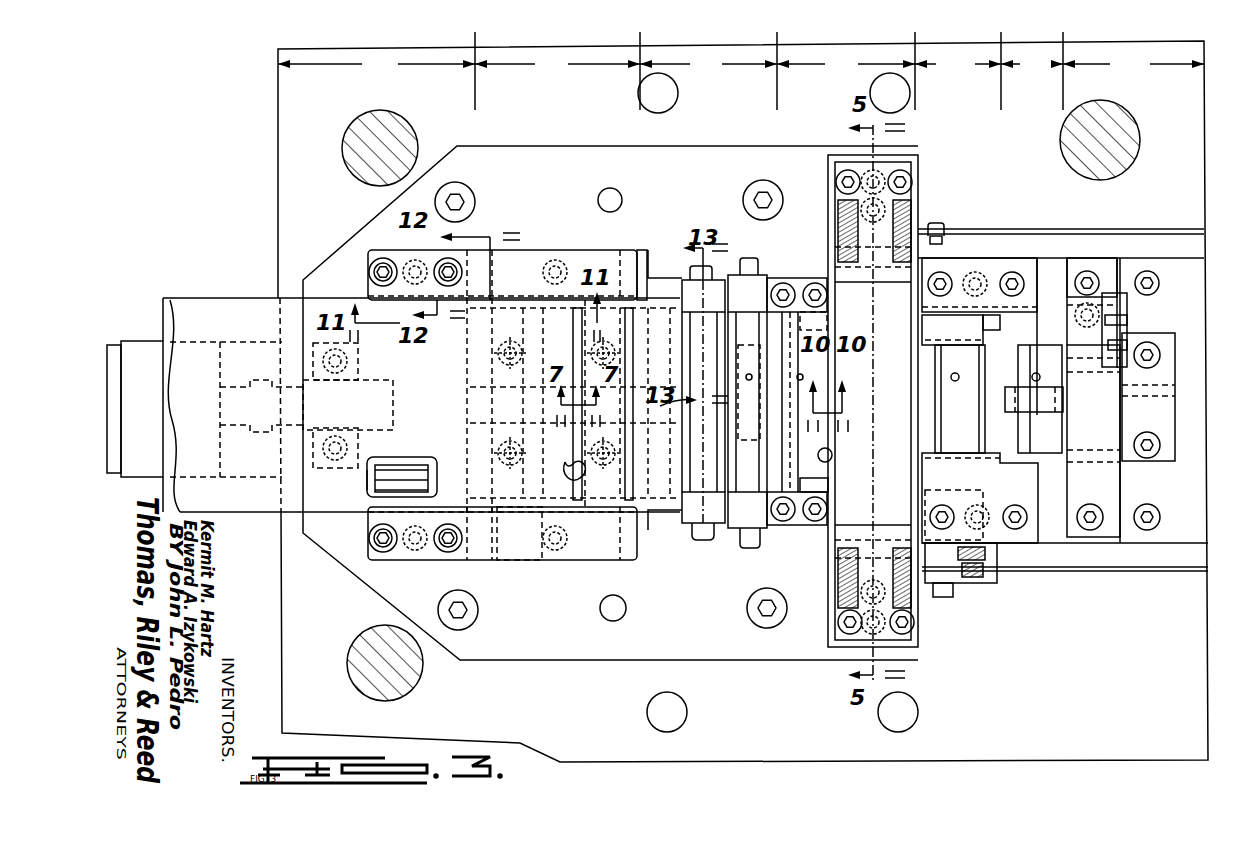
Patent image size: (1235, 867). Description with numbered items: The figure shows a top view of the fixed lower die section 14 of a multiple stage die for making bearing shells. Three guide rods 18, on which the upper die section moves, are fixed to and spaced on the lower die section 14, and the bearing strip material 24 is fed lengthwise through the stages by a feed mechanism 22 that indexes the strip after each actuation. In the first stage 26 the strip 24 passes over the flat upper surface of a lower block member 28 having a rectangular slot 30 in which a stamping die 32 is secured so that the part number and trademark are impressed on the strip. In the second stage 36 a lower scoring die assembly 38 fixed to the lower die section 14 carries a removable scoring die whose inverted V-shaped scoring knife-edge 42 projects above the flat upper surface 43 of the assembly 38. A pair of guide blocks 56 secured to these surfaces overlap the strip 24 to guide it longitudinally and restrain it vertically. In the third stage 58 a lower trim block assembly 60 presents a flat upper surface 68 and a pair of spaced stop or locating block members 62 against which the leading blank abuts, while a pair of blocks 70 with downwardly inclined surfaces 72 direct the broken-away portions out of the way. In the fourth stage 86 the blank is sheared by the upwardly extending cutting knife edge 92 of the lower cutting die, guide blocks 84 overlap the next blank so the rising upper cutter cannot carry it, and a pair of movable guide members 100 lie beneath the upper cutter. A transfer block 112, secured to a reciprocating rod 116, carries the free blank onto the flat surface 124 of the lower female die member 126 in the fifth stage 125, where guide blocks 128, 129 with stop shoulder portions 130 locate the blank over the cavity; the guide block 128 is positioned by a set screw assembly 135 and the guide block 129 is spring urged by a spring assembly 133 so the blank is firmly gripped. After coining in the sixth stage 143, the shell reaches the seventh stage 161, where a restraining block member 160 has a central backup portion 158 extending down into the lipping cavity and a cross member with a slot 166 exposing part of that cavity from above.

The lower die section 14 is at (260, 178).
The guide rods 18 is at (345, 150).
The bearing strip material 24 is at (187, 296).
The first stage 26 is at (376, 63).
The second stage 36 is at (557, 63).
The third stage 58 is at (708, 63).
The fourth stage 86 is at (846, 63).
The fifth stage 125 is at (958, 63).
The sixth stage 143 is at (1032, 63).
The seventh stage 161 is at (1103, 488).
The guide blocks 56 is at (479, 258).
The lower scoring die assembly 38 is at (585, 290).
The rod 116 is at (470, 383).
The lower block member 28 is at (402, 462).
The stamping die 32 is at (411, 461).
The feed mechanism 22 is at (420, 472).
The rectangular slot 30 is at (367, 480).
The upper surface 43 is at (519, 533).
The scoring knife-edge 42 is at (580, 482).
The flat upper surface 68 is at (688, 276).
The blocks 70 is at (722, 274).
The downwardly inclined surface 72 is at (714, 300).
The lower trim block assembly 60 is at (684, 536).
The stop or locating block members 62 is at (758, 276).
The guide blocks 84 is at (806, 278).
The transfer block 112 is at (769, 392).
The cutting knife edge 92 is at (828, 462).
The movable guide members 100 is at (913, 212).
The set screw assembly 135 is at (937, 223).
The guide block 128 is at (972, 266).
The flat surface 124 is at (978, 294).
The lower female die member 126 is at (1016, 294).
The restraining block member 160 is at (1107, 261).
The stop shoulder portion 130 is at (978, 322).
The central portion 158 is at (1040, 400).
The slot 166 is at (1128, 326).
The guide block 129 is at (1030, 547).
The spring assembly 133 is at (998, 573).